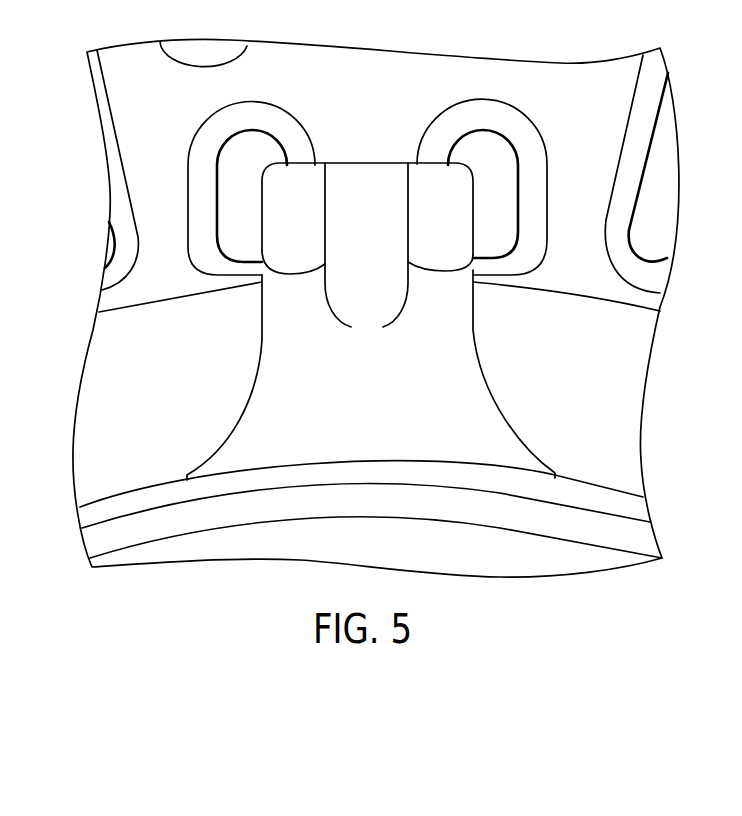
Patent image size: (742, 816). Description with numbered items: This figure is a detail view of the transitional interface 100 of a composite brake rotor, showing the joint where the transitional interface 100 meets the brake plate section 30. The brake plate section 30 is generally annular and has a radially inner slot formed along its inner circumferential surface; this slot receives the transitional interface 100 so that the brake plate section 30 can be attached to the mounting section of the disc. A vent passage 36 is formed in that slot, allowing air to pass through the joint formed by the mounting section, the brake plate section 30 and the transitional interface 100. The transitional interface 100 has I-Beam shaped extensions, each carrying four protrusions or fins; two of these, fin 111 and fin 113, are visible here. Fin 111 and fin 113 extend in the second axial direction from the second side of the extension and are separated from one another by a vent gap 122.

The transitional interface 100 is at (618, 395).
The brake plate section 30 is at (622, 218).
The vent passage 36 is at (368, 163).
The fin 113 is at (452, 223).
The vent gap 122 is at (387, 258).
The fin 111 is at (278, 232).